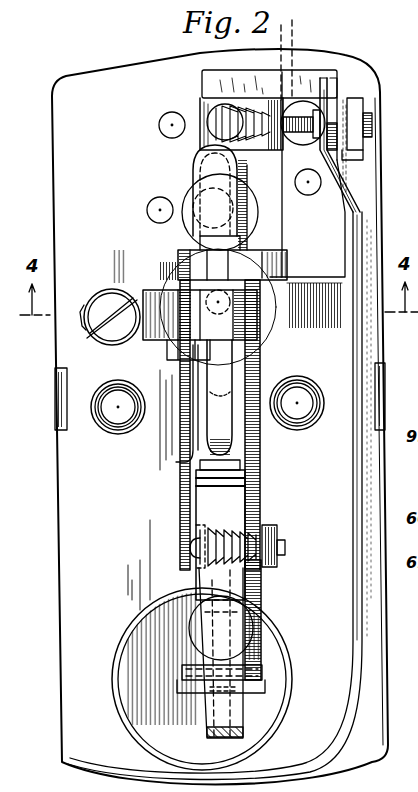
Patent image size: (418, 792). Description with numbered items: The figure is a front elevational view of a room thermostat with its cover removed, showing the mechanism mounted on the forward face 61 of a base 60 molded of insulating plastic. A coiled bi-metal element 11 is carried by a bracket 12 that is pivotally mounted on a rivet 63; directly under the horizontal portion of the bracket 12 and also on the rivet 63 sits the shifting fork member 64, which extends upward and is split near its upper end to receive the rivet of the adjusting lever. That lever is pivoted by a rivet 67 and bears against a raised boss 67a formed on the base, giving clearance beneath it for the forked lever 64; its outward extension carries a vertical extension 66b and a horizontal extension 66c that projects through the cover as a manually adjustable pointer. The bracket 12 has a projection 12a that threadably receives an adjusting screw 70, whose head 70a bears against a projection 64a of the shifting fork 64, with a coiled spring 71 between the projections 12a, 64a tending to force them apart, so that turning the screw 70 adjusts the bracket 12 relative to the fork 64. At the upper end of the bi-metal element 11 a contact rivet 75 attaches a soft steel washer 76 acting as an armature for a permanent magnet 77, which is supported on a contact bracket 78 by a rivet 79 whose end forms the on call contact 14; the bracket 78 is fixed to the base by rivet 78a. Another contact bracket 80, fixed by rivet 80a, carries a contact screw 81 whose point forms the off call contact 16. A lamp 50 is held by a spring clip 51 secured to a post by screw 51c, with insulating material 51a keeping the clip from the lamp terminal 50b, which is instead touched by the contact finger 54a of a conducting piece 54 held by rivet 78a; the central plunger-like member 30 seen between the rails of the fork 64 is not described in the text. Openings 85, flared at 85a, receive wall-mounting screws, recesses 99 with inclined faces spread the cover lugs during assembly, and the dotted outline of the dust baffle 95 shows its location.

The coiled bi-metal element 11 is at (356, 598).
The bracket 12 is at (261, 588).
The projection 12a is at (277, 531).
The on call contact 14 is at (340, 162).
The off call contact 16 is at (300, 144).
The plunger 30 is at (220, 405).
The lamp 50 is at (195, 170).
The lamp terminal 50b is at (200, 250).
The spring clip 51 is at (141, 292).
The insulating material 51a is at (185, 345).
The screw 51c is at (100, 295).
The conducting piece 54 is at (307, 200).
The contact finger 54a is at (272, 264).
The base 60 is at (53, 500).
The forward face 61 is at (139, 490).
The rivet 63 is at (196, 640).
The shifting fork member 64 is at (260, 370).
The projection 64a is at (198, 534).
The vertical extension 66b is at (208, 710).
The horizontal extension 66c is at (235, 737).
The pivot rivet 67 is at (175, 216).
The raised boss 67a is at (185, 198).
The adjusting screw 70 is at (285, 548).
The screw head 70a is at (192, 552).
The coiled spring 71 is at (258, 518).
The contact rivet 75 is at (366, 82).
The soft steel washer 76 is at (336, 97).
The permanent magnet 77 is at (360, 156).
The contact bracket 78 is at (364, 104).
The rivet 78a is at (306, 102).
The rivet 79 is at (373, 125).
The contact bracket 80 is at (203, 104).
The rivet 80a is at (212, 132).
The contact screw 81 is at (216, 117).
The openings 85 is at (112, 412).
The flared portion 85a is at (118, 430).
The baffle 95 is at (297, 62).
The recesses 99 is at (56, 405).